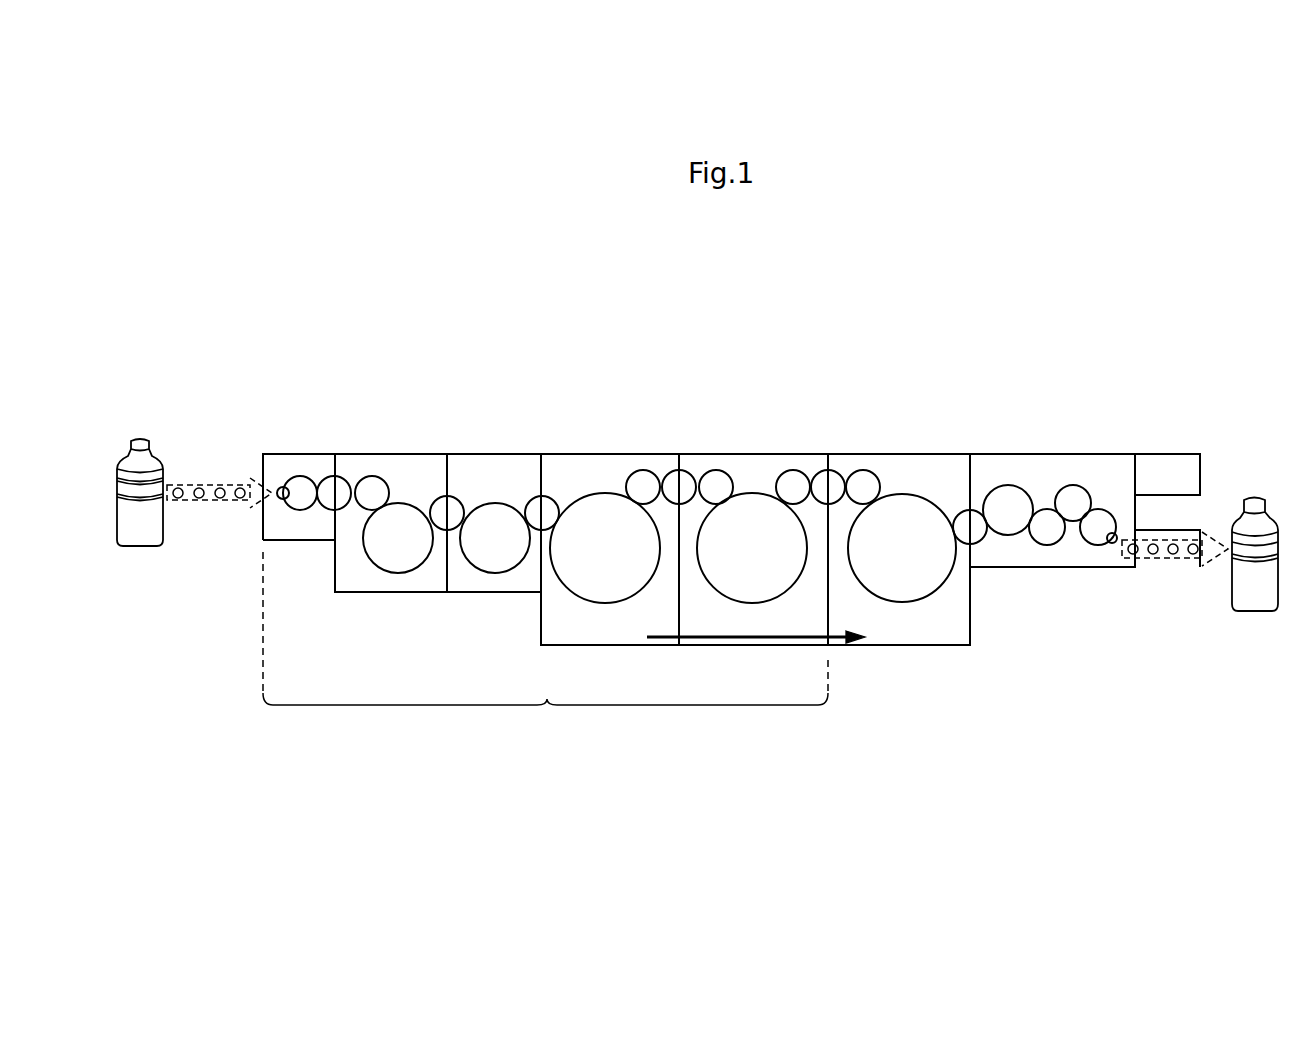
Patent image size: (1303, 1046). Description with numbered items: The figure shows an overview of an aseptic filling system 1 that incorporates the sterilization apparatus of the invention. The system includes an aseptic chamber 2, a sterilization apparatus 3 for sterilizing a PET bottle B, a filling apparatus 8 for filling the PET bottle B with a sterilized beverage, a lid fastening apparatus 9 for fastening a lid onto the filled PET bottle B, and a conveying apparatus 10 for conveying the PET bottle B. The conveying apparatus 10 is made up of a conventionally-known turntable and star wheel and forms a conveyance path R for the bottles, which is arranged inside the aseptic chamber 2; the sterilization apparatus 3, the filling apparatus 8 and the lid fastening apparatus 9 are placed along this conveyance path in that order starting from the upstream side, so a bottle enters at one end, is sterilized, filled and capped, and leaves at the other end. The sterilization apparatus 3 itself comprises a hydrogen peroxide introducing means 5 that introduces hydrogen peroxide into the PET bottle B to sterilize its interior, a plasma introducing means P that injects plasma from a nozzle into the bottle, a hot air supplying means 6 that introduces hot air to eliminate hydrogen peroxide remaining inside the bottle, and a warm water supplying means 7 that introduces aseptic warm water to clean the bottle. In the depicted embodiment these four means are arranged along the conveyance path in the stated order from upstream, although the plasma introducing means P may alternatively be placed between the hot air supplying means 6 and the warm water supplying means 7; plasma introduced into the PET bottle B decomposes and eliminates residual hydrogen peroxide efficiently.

The aseptic filling system 1 is at (907, 344).
The aseptic chamber 2 is at (790, 454).
The sterilization apparatus 3 is at (545, 647).
The hydrogen peroxide introducing means 5 is at (403, 492).
The plasma introducing means P is at (436, 485).
The hot air supplying means 6 is at (500, 492).
The warm water supplying means 7 is at (758, 482).
The filling apparatus 8 is at (931, 481).
The lid fastening apparatus 9 is at (1050, 479).
The conveying apparatus 10 is at (756, 626).
The PET bottle B is at (143, 547).